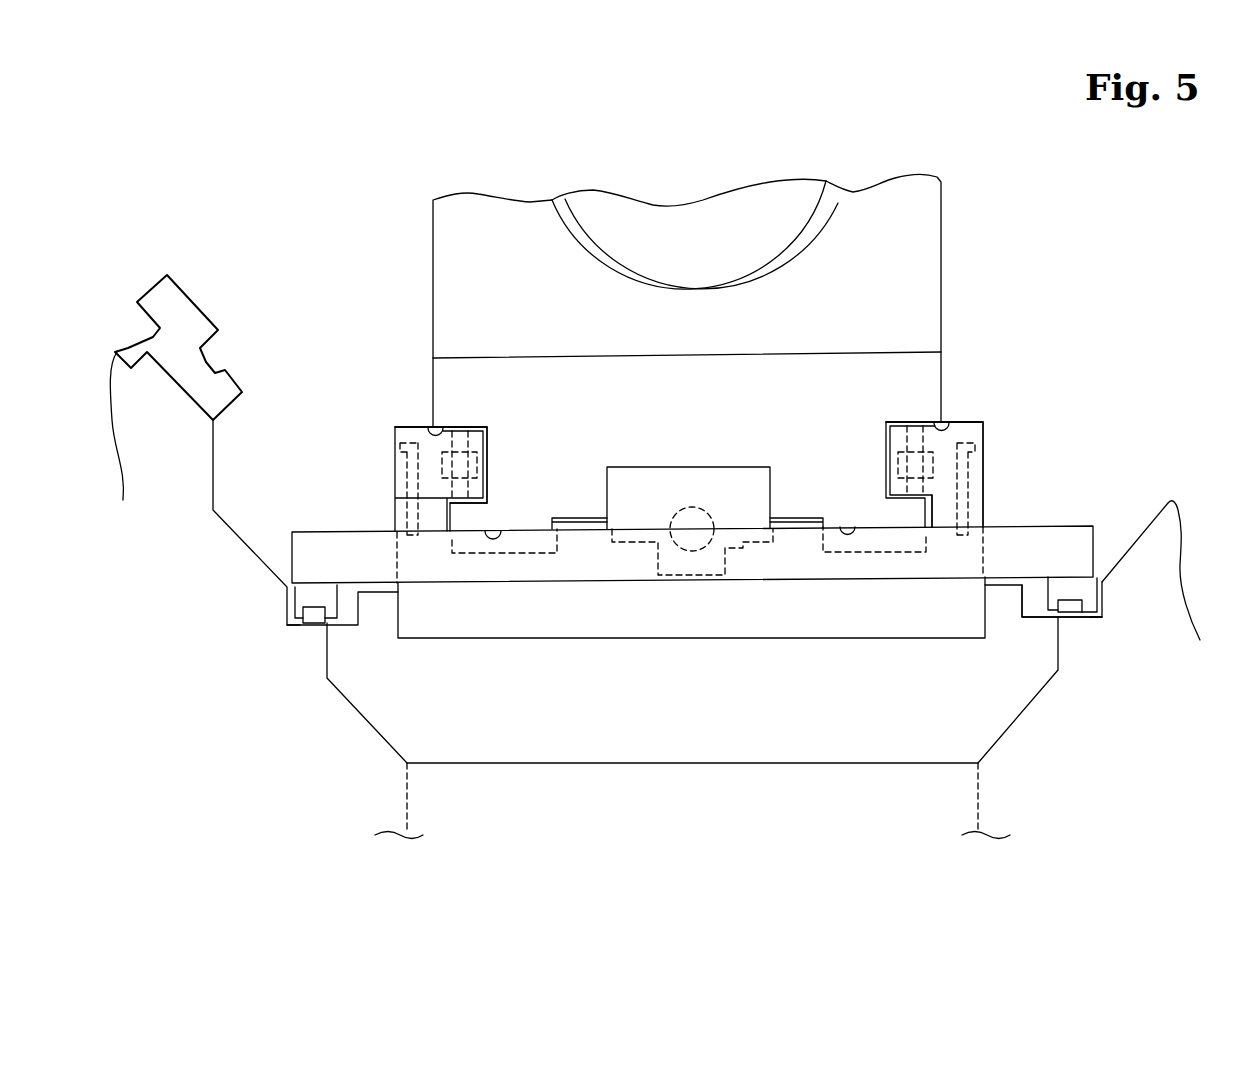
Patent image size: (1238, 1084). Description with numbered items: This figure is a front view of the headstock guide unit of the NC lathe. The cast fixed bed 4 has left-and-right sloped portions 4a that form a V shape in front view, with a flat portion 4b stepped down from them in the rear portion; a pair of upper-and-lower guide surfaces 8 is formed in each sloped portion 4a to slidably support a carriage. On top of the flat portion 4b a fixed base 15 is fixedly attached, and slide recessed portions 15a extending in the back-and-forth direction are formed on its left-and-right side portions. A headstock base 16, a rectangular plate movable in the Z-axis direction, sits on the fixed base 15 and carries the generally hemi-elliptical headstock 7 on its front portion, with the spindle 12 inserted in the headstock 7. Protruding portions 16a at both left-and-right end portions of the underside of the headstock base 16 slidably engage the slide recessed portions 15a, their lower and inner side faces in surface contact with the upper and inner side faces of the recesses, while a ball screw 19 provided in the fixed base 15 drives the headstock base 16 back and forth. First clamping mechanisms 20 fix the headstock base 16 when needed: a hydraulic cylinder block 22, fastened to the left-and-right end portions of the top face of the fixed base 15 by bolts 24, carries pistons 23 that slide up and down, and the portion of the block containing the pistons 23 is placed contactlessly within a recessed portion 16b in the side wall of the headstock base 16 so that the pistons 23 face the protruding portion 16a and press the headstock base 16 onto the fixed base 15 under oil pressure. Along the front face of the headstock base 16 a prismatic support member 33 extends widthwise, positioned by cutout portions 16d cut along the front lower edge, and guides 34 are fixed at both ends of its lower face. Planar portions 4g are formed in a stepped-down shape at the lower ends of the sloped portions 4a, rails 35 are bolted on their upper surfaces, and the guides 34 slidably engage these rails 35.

The fixed bed 4 is at (1189, 572).
The sloped portion 4a is at (240, 534).
The flat portion 4b is at (517, 634).
The planar portion 4g is at (293, 624).
The headstock 7 is at (942, 234).
The guide surface 8 is at (203, 312).
The spindle 12 is at (838, 205).
The fixed base 15 is at (986, 508).
The slide recessed portion 15a is at (512, 553).
The headstock base 16 is at (943, 368).
The protruding portion 16a is at (439, 542).
The recessed portion 16b is at (428, 426).
The cutout portion 16d is at (494, 531).
The ball screw 19 is at (707, 519).
The first clamping mechanism 20 is at (404, 424).
The hydraulic cylinder block 22 is at (394, 440).
The piston 23 is at (493, 453).
The bolt 24 is at (395, 476).
The support member 33 is at (1063, 526).
The guide 34 is at (343, 592).
The rail 35 is at (305, 607).